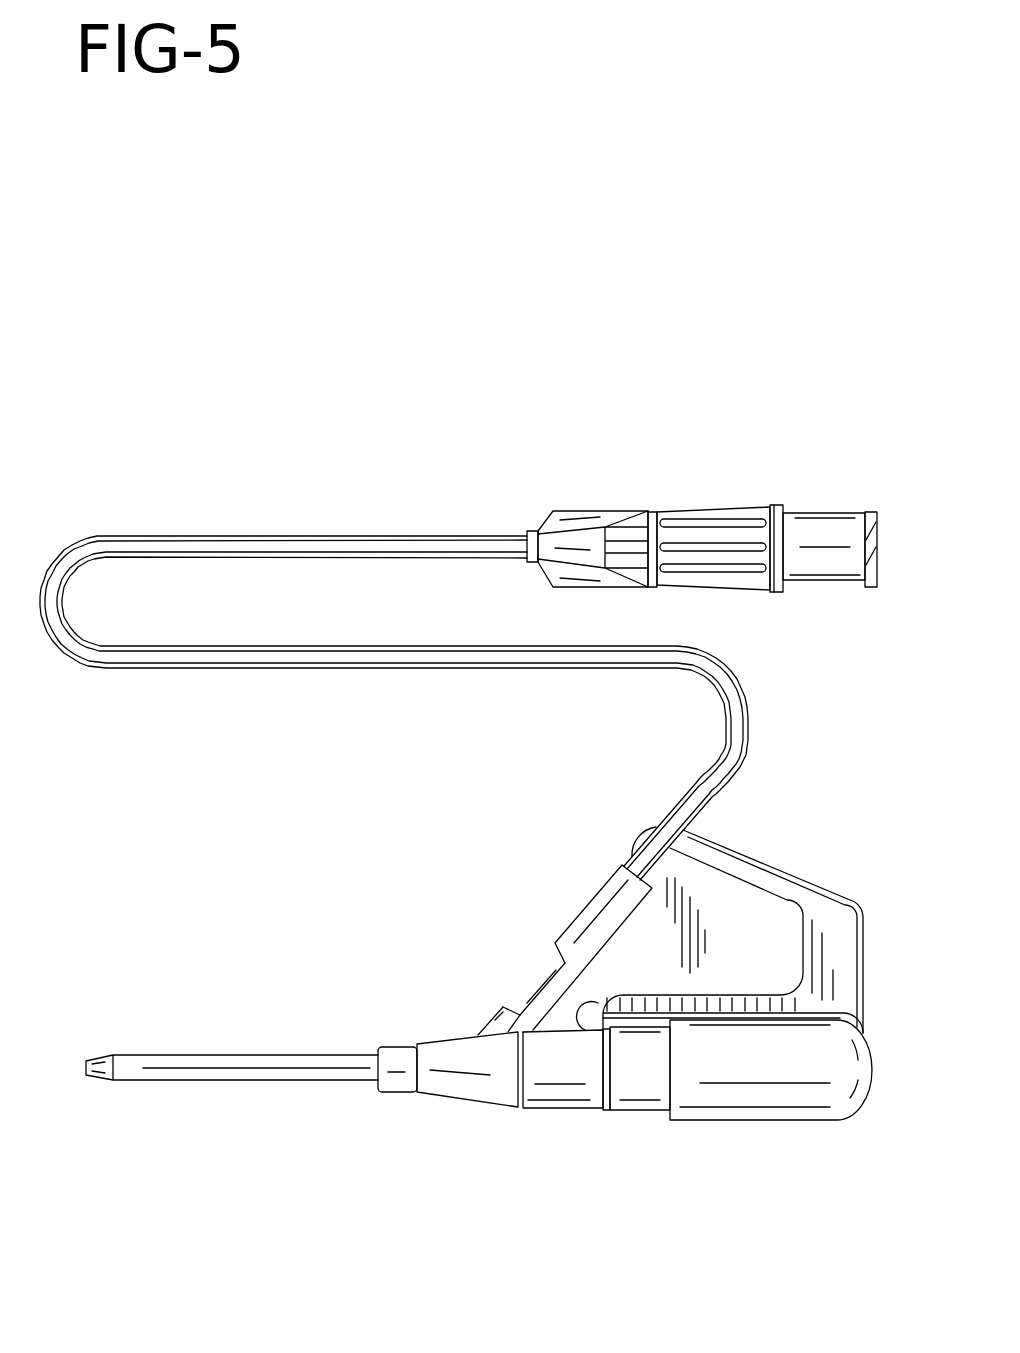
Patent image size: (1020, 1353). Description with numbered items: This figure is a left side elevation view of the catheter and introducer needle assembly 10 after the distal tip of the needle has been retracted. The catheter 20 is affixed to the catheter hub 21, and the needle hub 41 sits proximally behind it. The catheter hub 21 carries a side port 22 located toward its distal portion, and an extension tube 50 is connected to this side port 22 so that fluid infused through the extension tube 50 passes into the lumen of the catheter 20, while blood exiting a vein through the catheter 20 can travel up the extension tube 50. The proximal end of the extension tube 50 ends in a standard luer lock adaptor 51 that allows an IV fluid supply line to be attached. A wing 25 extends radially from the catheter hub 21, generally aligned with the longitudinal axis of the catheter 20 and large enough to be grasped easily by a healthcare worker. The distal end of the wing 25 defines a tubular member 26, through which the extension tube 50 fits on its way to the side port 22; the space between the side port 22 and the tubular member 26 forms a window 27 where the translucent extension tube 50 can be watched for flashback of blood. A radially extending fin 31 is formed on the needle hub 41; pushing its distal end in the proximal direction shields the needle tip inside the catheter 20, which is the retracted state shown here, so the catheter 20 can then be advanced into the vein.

The catheter and introducer needle assembly 10 is at (168, 820).
The catheter 20 is at (233, 1082).
The catheter hub 21 is at (467, 1100).
The side port 22 is at (487, 1018).
The wing 25 is at (764, 924).
The tubular member 26 is at (585, 907).
The window 27 is at (522, 978).
The fin 31 is at (858, 905).
The needle hub 41 is at (757, 1120).
The extension tube 50 is at (302, 668).
The luer lock adaptor 51 is at (872, 510).